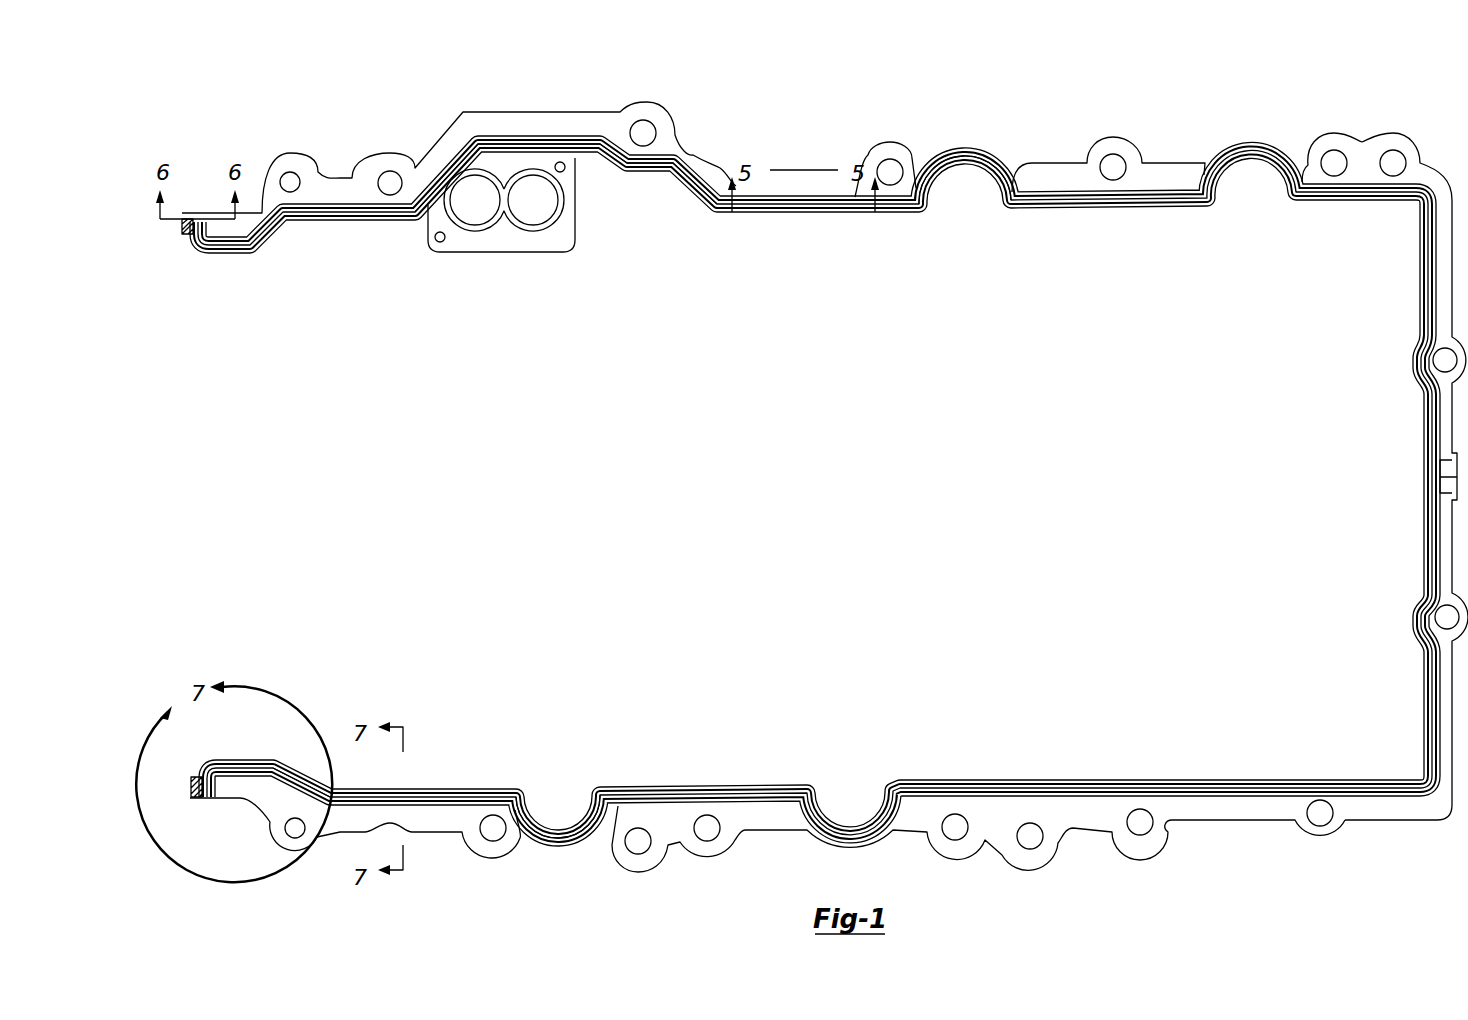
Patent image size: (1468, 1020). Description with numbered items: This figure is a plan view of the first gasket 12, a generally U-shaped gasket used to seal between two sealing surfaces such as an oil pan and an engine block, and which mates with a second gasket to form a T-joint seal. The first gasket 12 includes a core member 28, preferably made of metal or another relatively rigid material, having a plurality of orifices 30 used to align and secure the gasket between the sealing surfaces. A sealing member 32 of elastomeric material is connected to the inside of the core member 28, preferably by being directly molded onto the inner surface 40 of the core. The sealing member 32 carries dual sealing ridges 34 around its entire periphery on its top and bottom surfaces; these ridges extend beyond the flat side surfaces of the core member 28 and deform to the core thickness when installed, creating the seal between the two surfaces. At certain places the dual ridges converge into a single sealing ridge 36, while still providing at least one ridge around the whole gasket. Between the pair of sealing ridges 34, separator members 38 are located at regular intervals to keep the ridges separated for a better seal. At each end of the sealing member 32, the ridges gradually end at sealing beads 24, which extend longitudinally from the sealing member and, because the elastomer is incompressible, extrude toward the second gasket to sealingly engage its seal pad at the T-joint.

The first gasket 12 is at (812, 481).
The sealing beads 24 is at (190, 236).
The core member 28 is at (1090, 832).
The orifices 30 is at (390, 180).
The sealing member 32 is at (220, 253).
The sealing ridges 34 is at (408, 797).
The single sealing ridge 36 is at (958, 160).
The separator members 38 is at (778, 205).
The inner surface of the core member 40 is at (647, 163).